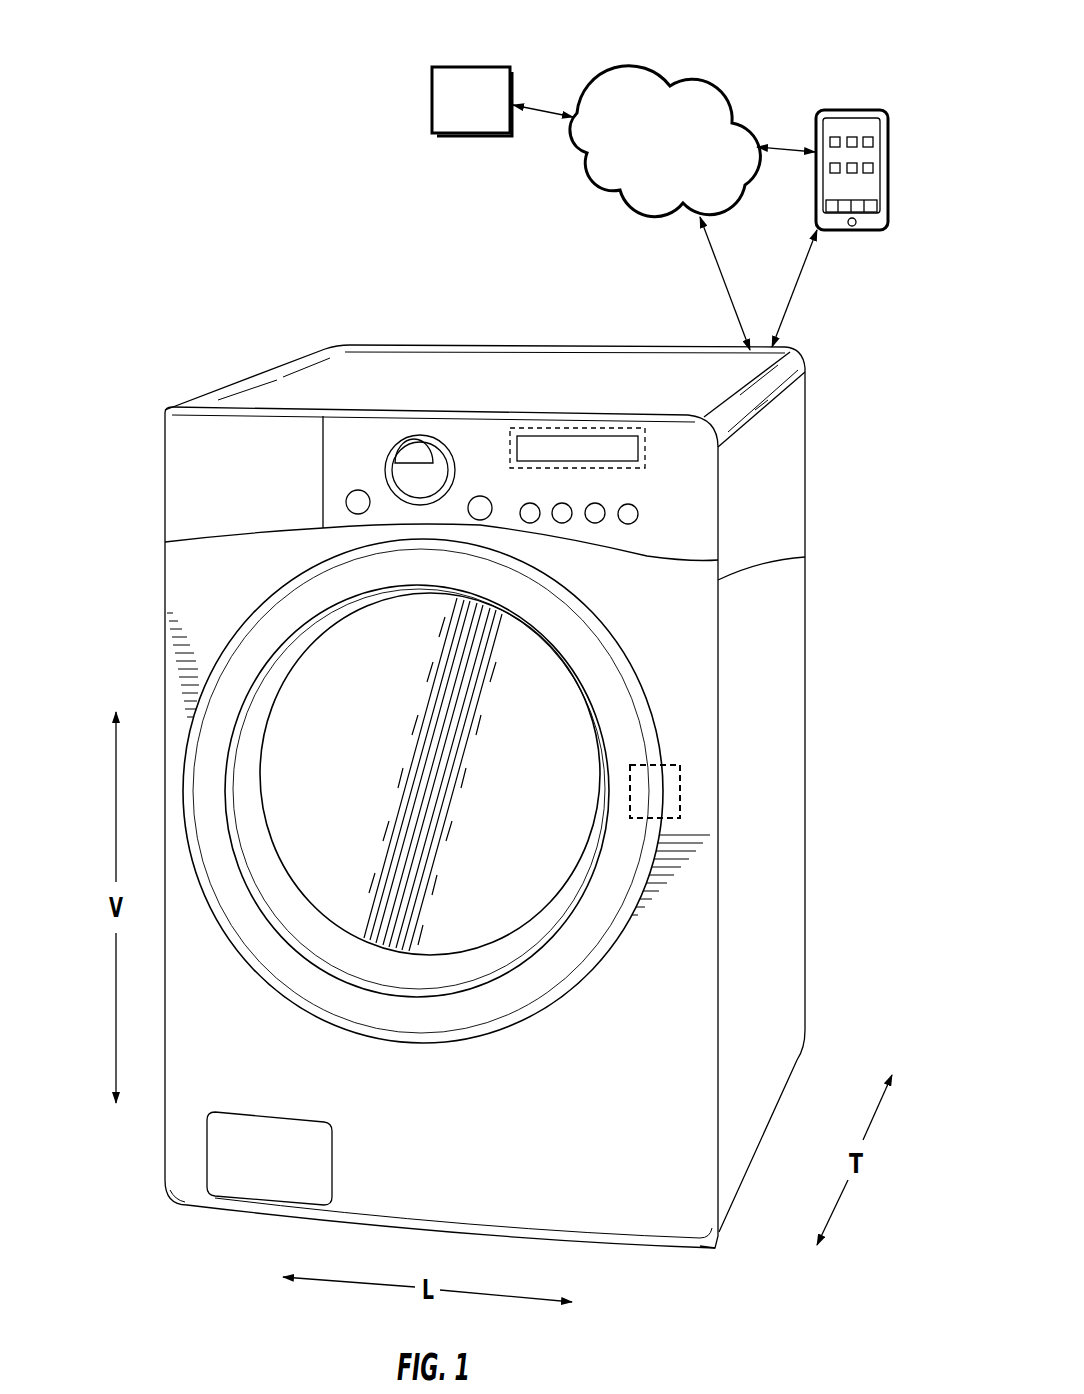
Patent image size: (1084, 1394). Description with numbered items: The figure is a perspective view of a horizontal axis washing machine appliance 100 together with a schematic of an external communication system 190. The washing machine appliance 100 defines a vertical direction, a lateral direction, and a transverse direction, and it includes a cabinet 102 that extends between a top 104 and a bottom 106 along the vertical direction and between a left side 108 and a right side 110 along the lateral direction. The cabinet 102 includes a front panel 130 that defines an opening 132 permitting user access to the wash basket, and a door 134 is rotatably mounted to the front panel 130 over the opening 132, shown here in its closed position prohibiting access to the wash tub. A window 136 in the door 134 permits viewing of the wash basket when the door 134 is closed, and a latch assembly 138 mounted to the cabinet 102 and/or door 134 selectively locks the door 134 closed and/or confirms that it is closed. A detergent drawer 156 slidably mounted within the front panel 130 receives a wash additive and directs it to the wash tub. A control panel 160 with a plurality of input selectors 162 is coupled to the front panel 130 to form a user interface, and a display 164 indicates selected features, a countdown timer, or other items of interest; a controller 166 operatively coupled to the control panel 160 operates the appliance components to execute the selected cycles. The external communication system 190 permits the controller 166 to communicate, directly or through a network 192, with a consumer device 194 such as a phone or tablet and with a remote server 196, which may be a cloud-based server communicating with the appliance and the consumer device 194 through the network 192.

The washing machine appliance 100 is at (185, 305).
The cabinet 102 is at (787, 645).
The top 104 is at (823, 355).
The bottom 106 is at (805, 1093).
The left side 108 is at (170, 1213).
The right side 110 is at (715, 1252).
The front panel 130 is at (185, 602).
The opening 132 is at (627, 648).
The door 134 is at (637, 750).
The window 136 is at (375, 731).
The latch assembly 138 is at (680, 797).
The detergent drawer 156 is at (185, 443).
The control panel 160 is at (487, 443).
The input selectors 162 is at (413, 437).
The display 164 is at (590, 440).
The controller 166 is at (560, 430).
The external communication system 190 is at (812, 67).
The network 192 is at (674, 157).
The consumer device 194 is at (890, 185).
The remote server 196 is at (488, 114).